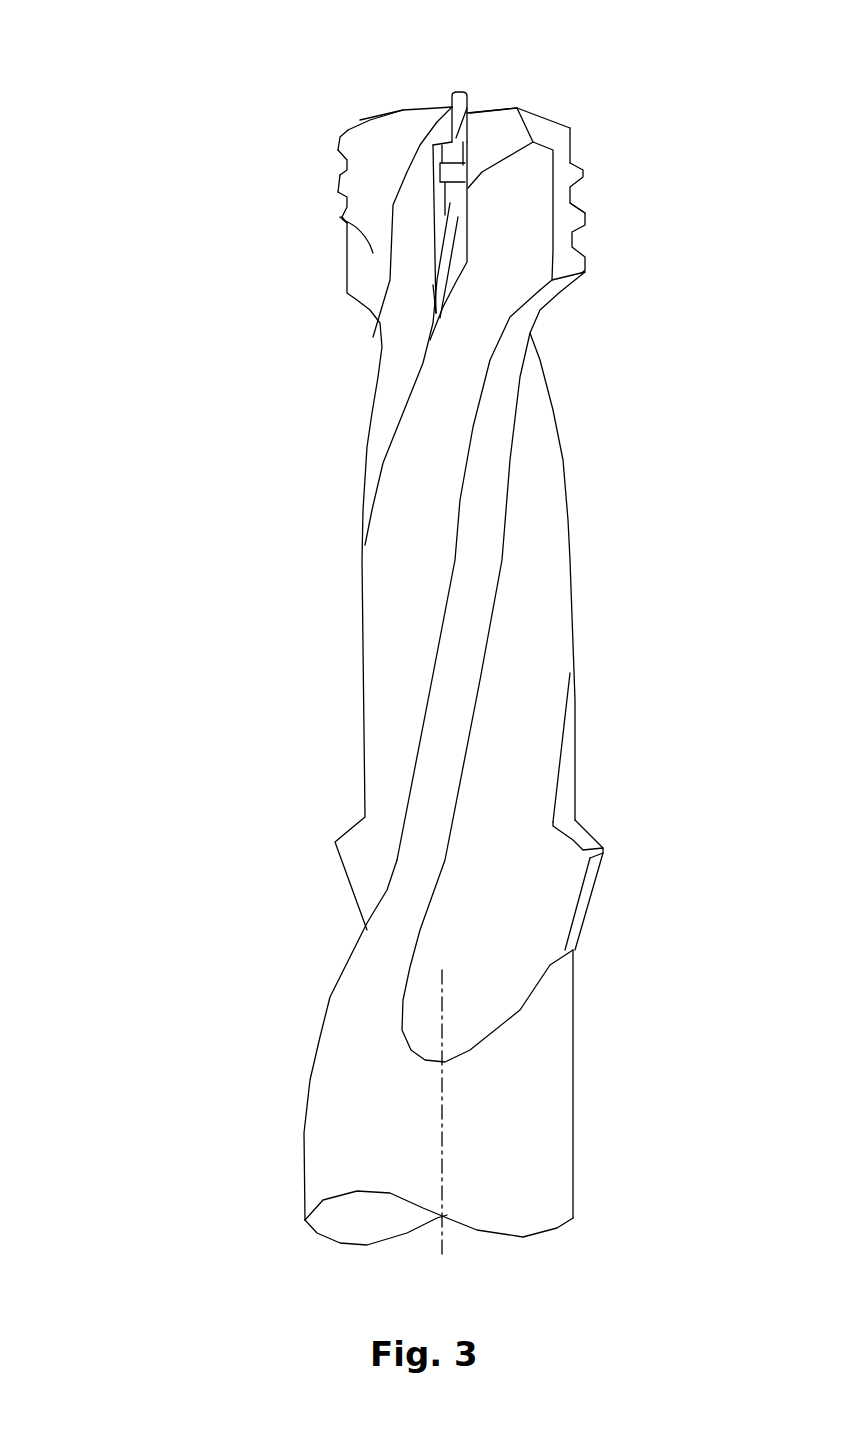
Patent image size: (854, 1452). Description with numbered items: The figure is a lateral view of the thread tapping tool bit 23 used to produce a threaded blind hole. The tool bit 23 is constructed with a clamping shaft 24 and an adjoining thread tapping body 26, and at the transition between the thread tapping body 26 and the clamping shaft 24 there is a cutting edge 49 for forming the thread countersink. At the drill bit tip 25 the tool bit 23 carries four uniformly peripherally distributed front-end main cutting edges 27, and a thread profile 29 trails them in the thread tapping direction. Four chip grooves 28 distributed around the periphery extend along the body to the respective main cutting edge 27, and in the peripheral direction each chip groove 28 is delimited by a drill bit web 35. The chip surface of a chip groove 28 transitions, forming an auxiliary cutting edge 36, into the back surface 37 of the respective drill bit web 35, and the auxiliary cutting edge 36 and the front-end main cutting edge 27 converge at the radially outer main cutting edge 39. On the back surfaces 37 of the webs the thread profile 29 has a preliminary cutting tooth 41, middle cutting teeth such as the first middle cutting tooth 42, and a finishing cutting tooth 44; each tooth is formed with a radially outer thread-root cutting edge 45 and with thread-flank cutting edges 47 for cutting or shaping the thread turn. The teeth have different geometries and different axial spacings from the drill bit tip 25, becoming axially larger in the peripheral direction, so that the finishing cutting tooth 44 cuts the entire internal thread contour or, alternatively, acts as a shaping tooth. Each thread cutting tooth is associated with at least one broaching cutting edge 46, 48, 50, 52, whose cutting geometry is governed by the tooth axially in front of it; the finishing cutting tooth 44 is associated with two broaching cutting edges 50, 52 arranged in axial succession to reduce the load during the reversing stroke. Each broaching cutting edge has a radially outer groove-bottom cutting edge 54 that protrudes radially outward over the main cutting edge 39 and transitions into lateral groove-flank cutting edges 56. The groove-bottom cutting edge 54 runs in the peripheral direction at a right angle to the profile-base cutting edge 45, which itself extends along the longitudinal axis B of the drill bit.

The thread tapping tool bit 23 is at (192, 653).
The clamping shaft 24 is at (337, 1031).
The drill bit tip 25 is at (467, 92).
The thread tapping body 26 is at (480, 862).
The front-end main cutting edge 27 is at (368, 118).
The chip groove 28 is at (530, 631).
The thread profile 29 is at (150, 165).
The drill bit web 35 is at (456, 716).
The auxiliary cutting edge 36 is at (465, 497).
The back surface 37 is at (470, 563).
The radially outer main cutting edge 39 is at (345, 135).
The preliminary cutting tooth 41 is at (453, 115).
The first middle cutting tooth 42 is at (236, 103).
The finishing cutting tooth 44 is at (585, 180).
The thread-root cutting edge 45 is at (340, 152).
The broaching cutting edge 46 is at (262, 415).
The thread-flank cutting edge 47 is at (343, 140).
The broaching cutting edge 48 is at (236, 275).
The cutting edge 49 is at (573, 841).
The broaching cutting edge 50 is at (585, 217).
The broaching cutting edge 52 is at (587, 270).
The groove-bottom cutting edge 54 is at (340, 217).
The groove-flank cutting edge 56 is at (345, 228).
The longitudinal axis B is at (473, 1118).